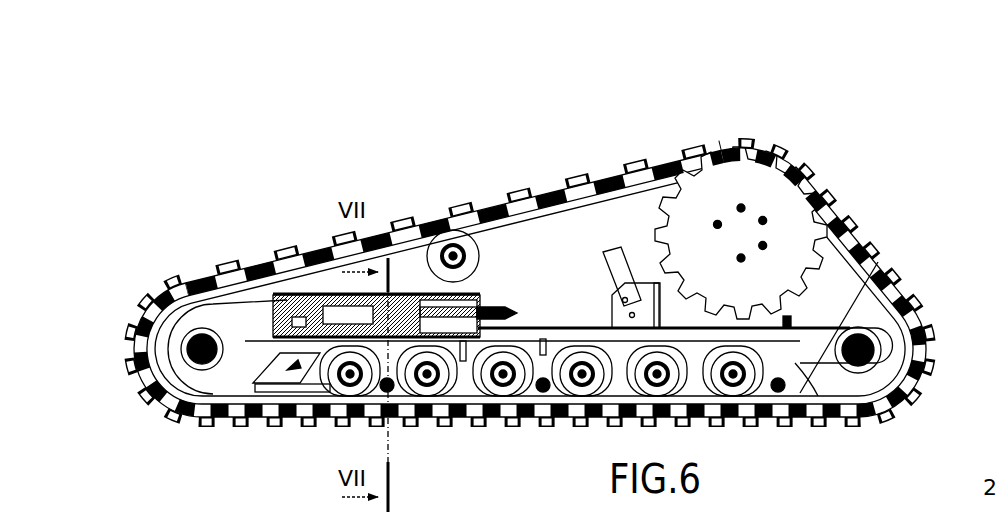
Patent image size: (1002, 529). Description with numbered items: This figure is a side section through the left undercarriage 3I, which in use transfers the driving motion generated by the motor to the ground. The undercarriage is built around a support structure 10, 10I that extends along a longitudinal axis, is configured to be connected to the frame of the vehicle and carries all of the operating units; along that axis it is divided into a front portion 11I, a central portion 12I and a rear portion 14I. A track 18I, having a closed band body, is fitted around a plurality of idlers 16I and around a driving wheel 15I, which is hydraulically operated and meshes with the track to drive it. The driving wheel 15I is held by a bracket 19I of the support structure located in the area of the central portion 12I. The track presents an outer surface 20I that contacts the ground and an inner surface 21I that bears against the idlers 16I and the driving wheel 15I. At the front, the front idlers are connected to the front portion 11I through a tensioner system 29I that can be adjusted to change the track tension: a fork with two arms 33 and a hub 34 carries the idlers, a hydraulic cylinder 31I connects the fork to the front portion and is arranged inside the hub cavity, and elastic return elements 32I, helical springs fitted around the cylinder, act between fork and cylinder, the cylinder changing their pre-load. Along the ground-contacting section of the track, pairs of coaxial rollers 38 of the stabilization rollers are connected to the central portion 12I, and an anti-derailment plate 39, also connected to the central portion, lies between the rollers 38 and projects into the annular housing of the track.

The left undercarriage 3I is at (860, 172).
The support structure 10 is at (569, 325).
The support structure 10I is at (590, 320).
The front portion 11I is at (288, 396).
The central portion 12I is at (600, 396).
The rear portion 14I is at (822, 398).
The driving wheel 15I is at (770, 182).
The idlers 16I is at (868, 280).
The track 18I is at (526, 192).
The bracket 19I is at (630, 252).
The outer surface 20I is at (872, 229).
The inner surface 21I is at (512, 224).
The tensioner system 29I is at (322, 290).
The hydraulic cylinder 31I is at (422, 282).
The elastic return elements 32I is at (185, 349).
The arms 33 is at (217, 338).
The hub 34 is at (300, 280).
The rollers 38 is at (340, 398).
The anti-derailment plate 39 is at (535, 394).